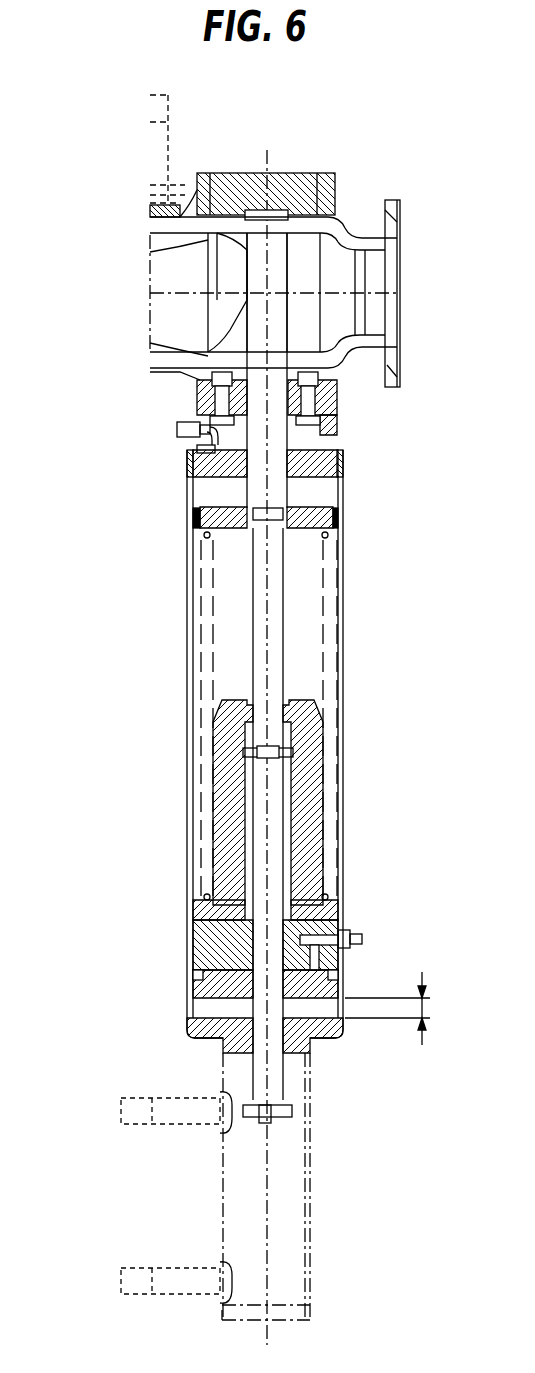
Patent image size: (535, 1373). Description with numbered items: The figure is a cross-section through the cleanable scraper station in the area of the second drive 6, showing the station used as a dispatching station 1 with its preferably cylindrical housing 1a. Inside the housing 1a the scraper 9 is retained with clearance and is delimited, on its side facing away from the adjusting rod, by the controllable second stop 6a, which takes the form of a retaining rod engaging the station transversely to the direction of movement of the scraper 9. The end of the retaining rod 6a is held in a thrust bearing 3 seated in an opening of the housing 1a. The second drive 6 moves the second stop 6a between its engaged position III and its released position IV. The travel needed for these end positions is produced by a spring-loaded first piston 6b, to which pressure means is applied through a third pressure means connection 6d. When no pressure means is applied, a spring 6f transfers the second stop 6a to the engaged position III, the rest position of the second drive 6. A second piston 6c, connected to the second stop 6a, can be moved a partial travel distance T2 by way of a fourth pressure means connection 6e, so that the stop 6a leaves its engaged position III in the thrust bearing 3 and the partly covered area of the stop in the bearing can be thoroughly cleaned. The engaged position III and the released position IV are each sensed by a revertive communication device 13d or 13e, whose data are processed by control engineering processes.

The dispatching station 1 is at (360, 183).
The housing 1a is at (183, 210).
The thrust bearing 3 is at (244, 205).
The engaged position III is at (290, 210).
The scraper 9 is at (187, 286).
The second drive 6 is at (358, 547).
The controllable second stop 6a is at (280, 321).
The first piston 6b is at (344, 508).
The second piston 6c is at (345, 985).
The third pressure means connection 6d is at (176, 430).
The fourth pressure means connection 6e is at (362, 935).
The spring 6f is at (330, 667).
The partial travel distance T2 is at (425, 1008).
The revertive communication device 13d is at (122, 1108).
The revertive communication device 13e is at (122, 1278).
The released position IV is at (290, 1278).